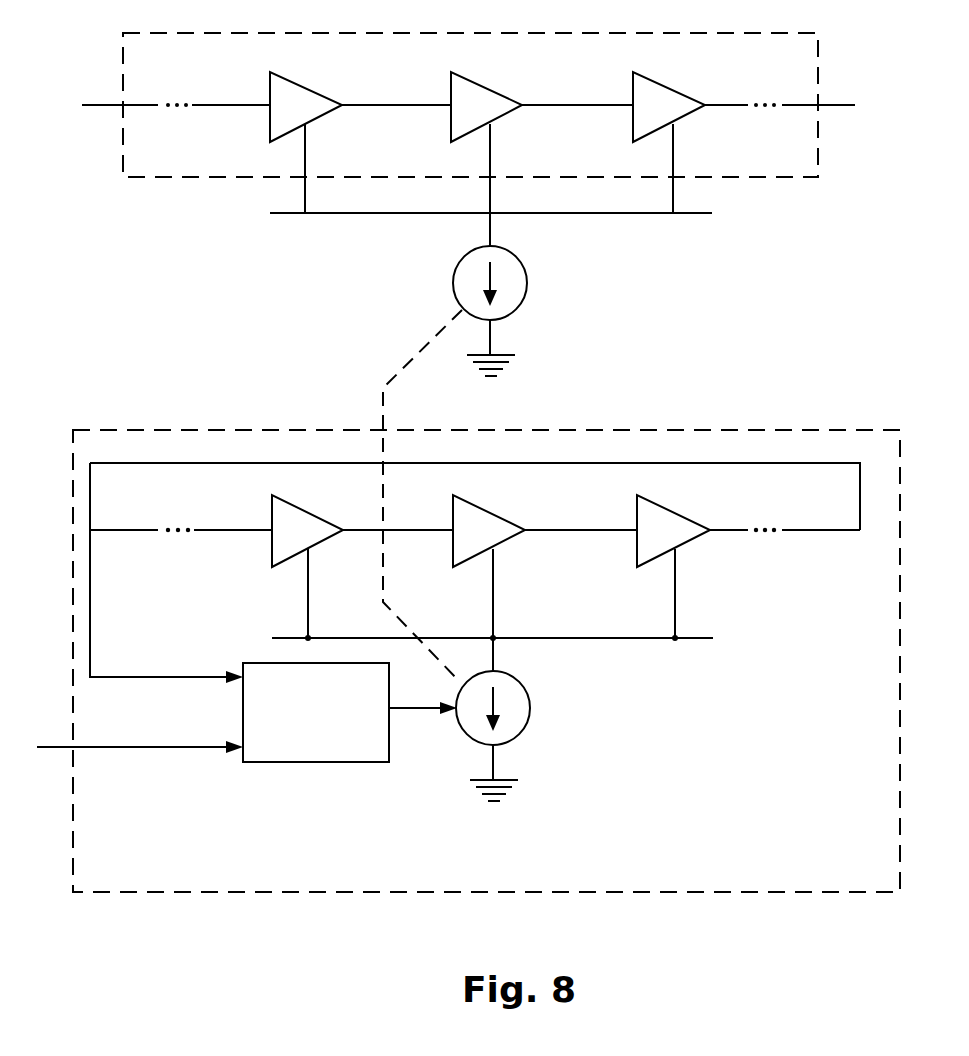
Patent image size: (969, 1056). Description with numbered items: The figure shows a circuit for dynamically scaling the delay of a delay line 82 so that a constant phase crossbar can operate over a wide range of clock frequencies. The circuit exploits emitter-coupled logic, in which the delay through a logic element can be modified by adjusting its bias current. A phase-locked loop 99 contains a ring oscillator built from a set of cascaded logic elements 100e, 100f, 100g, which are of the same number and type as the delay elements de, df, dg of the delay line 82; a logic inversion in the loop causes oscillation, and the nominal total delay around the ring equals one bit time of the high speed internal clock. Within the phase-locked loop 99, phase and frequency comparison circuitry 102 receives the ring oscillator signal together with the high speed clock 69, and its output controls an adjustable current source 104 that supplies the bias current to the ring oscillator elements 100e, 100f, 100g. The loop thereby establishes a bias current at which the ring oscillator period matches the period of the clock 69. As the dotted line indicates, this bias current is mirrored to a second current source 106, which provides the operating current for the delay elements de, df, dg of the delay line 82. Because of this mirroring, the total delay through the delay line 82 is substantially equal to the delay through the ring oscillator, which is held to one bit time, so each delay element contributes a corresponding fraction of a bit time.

The delay line 82 is at (166, 178).
The delay element de is at (270, 134).
The delay element df is at (451, 134).
The delay element dg is at (633, 134).
The second current source 106 is at (521, 262).
The phase-locked loop 99 is at (195, 893).
The logic element 100e is at (272, 558).
The logic element 100f is at (453, 558).
The logic element 100g is at (637, 558).
The phase and frequency comparison circuitry 102 is at (350, 712).
The adjustable current source 104 is at (523, 686).
The high speed clock 69 is at (115, 748).